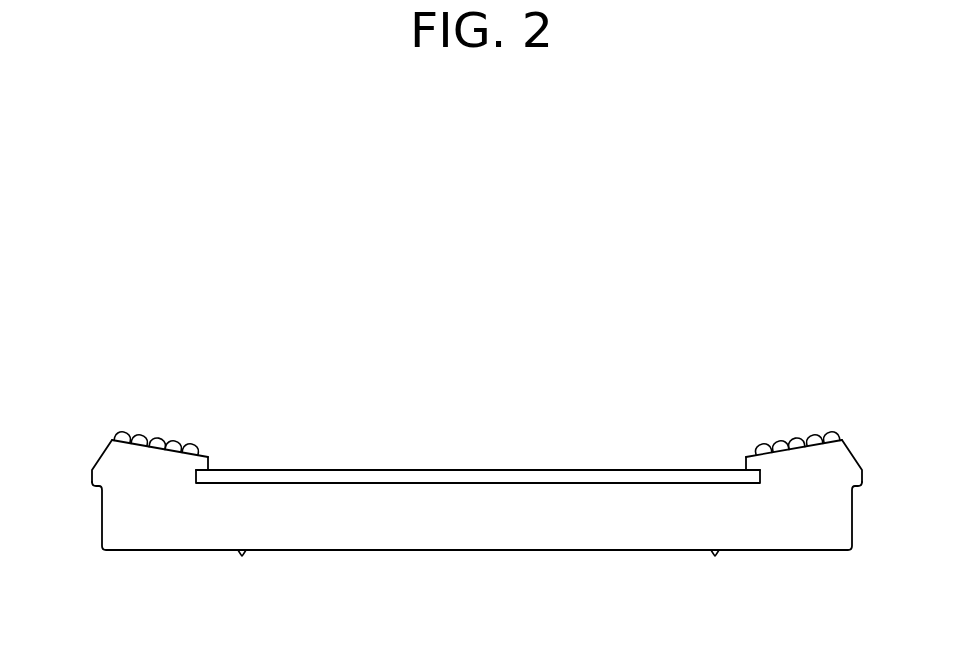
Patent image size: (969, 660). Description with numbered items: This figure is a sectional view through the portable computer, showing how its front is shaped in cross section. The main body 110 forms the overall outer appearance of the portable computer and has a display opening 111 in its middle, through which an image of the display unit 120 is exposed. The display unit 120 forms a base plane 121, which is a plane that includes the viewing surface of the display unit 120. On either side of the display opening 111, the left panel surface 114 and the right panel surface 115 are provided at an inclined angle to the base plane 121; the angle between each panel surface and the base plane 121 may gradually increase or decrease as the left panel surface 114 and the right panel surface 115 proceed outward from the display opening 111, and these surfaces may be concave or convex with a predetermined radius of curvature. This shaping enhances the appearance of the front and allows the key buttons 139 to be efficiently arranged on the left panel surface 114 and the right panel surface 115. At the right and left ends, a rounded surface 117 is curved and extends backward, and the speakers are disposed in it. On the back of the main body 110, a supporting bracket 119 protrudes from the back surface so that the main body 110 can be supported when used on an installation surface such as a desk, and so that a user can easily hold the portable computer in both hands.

The main body 110 is at (743, 355).
The display opening 111 is at (210, 458).
The left panel surface 114 is at (182, 435).
The right panel surface 115 is at (757, 451).
The rounded surface 117 is at (100, 452).
The supporting bracket 119 is at (243, 556).
The display unit 120 is at (205, 485).
The base plane 121 is at (732, 472).
The key buttons 139 is at (134, 434).